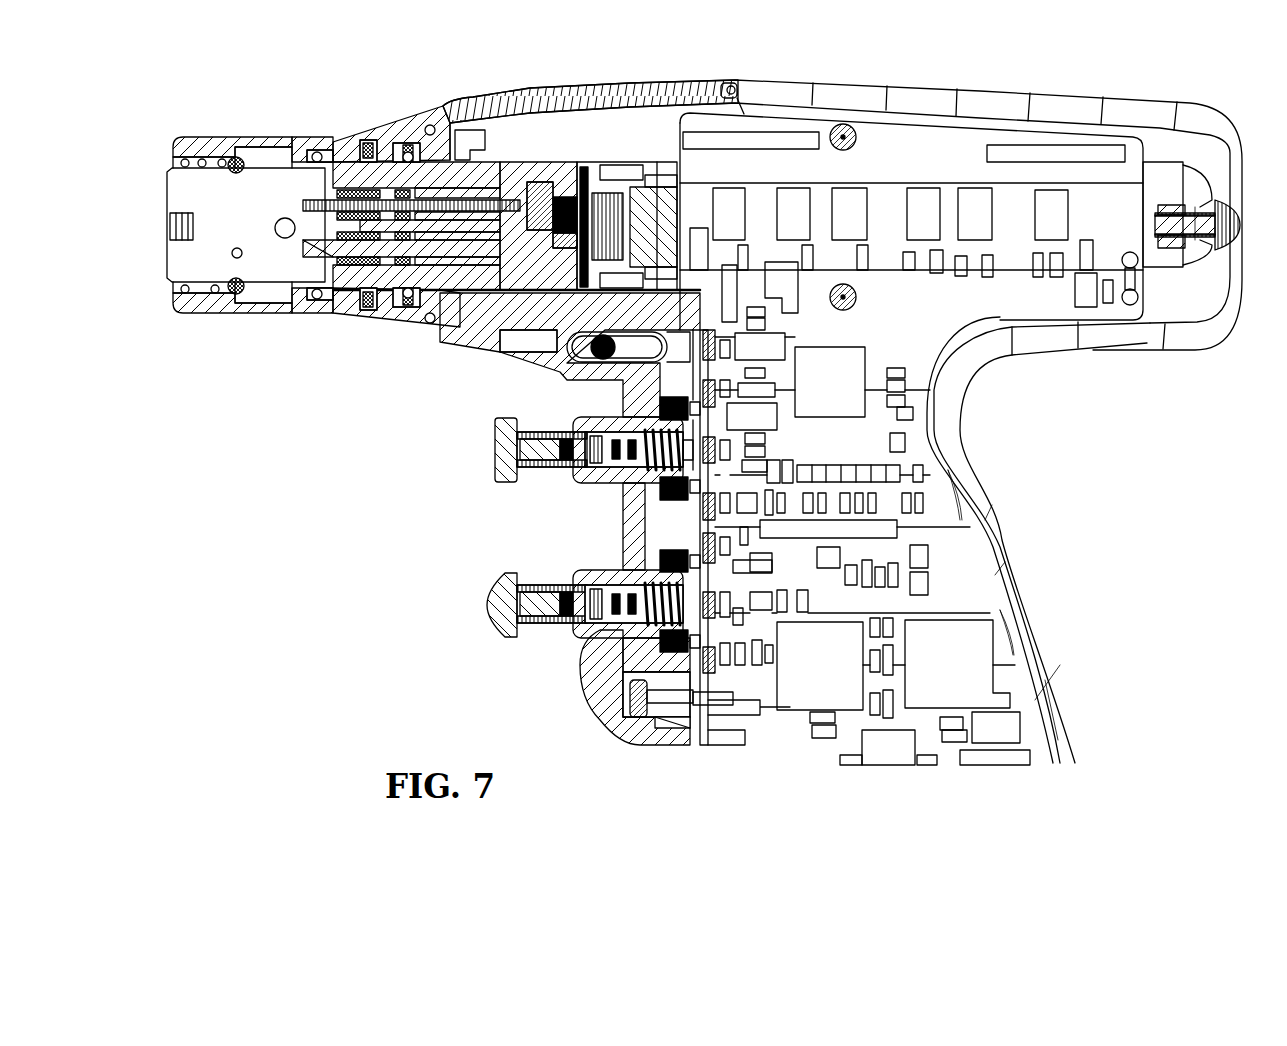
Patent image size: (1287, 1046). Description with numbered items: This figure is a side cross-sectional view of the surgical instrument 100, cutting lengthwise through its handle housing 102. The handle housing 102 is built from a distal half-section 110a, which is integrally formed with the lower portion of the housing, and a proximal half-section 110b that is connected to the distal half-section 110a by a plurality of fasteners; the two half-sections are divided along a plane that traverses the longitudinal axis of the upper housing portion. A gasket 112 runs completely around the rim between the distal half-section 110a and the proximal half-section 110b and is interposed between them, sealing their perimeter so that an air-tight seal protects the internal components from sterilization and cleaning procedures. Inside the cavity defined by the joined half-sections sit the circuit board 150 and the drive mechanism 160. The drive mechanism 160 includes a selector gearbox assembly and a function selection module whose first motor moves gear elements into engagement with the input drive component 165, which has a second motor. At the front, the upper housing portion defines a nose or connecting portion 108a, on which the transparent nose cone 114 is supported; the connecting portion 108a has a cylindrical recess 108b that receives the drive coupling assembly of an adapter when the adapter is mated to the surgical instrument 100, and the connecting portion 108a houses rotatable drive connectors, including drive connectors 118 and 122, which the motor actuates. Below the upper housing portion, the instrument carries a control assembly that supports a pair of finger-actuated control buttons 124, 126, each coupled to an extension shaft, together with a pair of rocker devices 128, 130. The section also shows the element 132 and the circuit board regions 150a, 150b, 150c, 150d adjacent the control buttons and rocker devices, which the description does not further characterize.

The surgical instrument 100 is at (993, 52).
The handle housing 102 is at (1080, 98).
The connecting portion 108a is at (203, 133).
The cylindrical recess 108b is at (175, 268).
The distal half-section 110a is at (474, 95).
The proximal half-section 110b is at (1168, 113).
The gasket 112 is at (726, 84).
The nose cone 114 is at (343, 138).
The rotatable drive connector 118 is at (308, 250).
The rotatable drive connector 122 is at (305, 198).
The control button 124 is at (497, 420).
The control button 126 is at (487, 597).
The rocker device 128 is at (573, 480).
The rocker device 130 is at (577, 693).
The sensor capsule 132 is at (633, 357).
The circuit board 150 is at (890, 125).
The switch contact 150a is at (705, 455).
The switch contact 150b is at (705, 391).
The switch contact 150c is at (705, 598).
The switch contact 150d is at (705, 658).
The drive mechanism 160 is at (522, 145).
The input drive component 165 is at (409, 140).